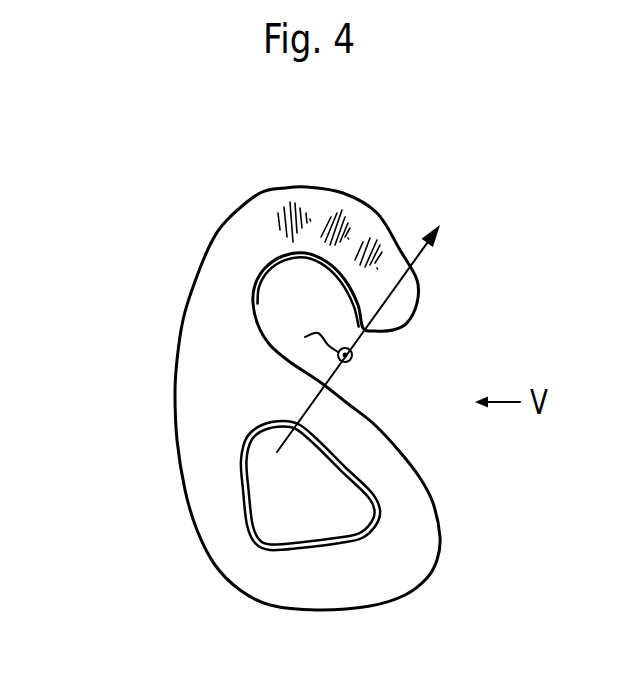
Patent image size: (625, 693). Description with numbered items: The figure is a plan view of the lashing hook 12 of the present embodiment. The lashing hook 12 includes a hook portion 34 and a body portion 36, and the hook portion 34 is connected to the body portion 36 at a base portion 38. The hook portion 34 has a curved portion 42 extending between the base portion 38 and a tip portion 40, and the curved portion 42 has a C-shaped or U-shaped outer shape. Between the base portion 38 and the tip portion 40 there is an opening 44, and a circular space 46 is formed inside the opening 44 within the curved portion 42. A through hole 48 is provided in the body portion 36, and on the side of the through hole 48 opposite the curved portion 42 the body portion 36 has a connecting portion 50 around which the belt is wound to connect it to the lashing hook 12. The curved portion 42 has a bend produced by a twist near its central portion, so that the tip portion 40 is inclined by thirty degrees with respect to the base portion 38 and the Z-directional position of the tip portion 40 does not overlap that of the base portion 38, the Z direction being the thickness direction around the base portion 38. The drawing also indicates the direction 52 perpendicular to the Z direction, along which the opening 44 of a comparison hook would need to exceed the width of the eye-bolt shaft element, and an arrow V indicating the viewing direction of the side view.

The lashing hook 12 is at (89, 270).
The hook portion 34 is at (142, 190).
The body portion 36 is at (142, 388).
The base portion 38 is at (243, 387).
The tip portion 40 is at (410, 327).
The curved portion 42 is at (294, 208).
The opening 44 is at (372, 358).
The circular space 46 is at (315, 312).
The through hole 48 is at (312, 510).
The connecting portion 50 is at (385, 615).
The direction perpendicular to the Z direction 52 is at (416, 258).